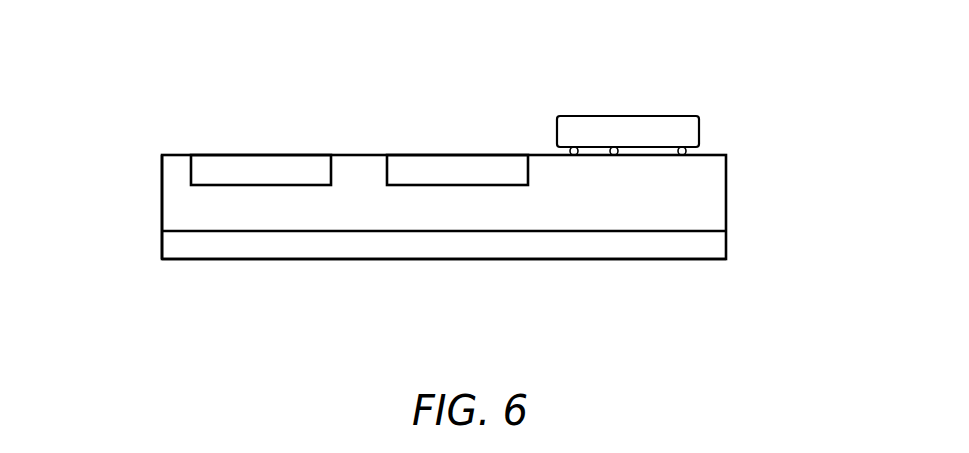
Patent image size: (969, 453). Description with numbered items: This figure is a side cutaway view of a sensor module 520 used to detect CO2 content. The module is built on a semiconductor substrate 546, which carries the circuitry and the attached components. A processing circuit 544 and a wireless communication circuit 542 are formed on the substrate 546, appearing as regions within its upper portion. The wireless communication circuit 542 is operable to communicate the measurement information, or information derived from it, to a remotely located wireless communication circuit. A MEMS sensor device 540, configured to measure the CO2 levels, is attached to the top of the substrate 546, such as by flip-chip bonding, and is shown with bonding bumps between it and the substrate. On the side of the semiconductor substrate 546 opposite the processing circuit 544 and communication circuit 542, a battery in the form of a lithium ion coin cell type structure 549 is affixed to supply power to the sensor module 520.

The sensor module 520 is at (770, 131).
The sensor device 540 is at (620, 115).
The wireless communication circuit 542 is at (253, 167).
The processing circuit 544 is at (447, 167).
The semiconductor substrate 546 is at (160, 212).
The lithium ion coin cell type structure 549 is at (275, 261).